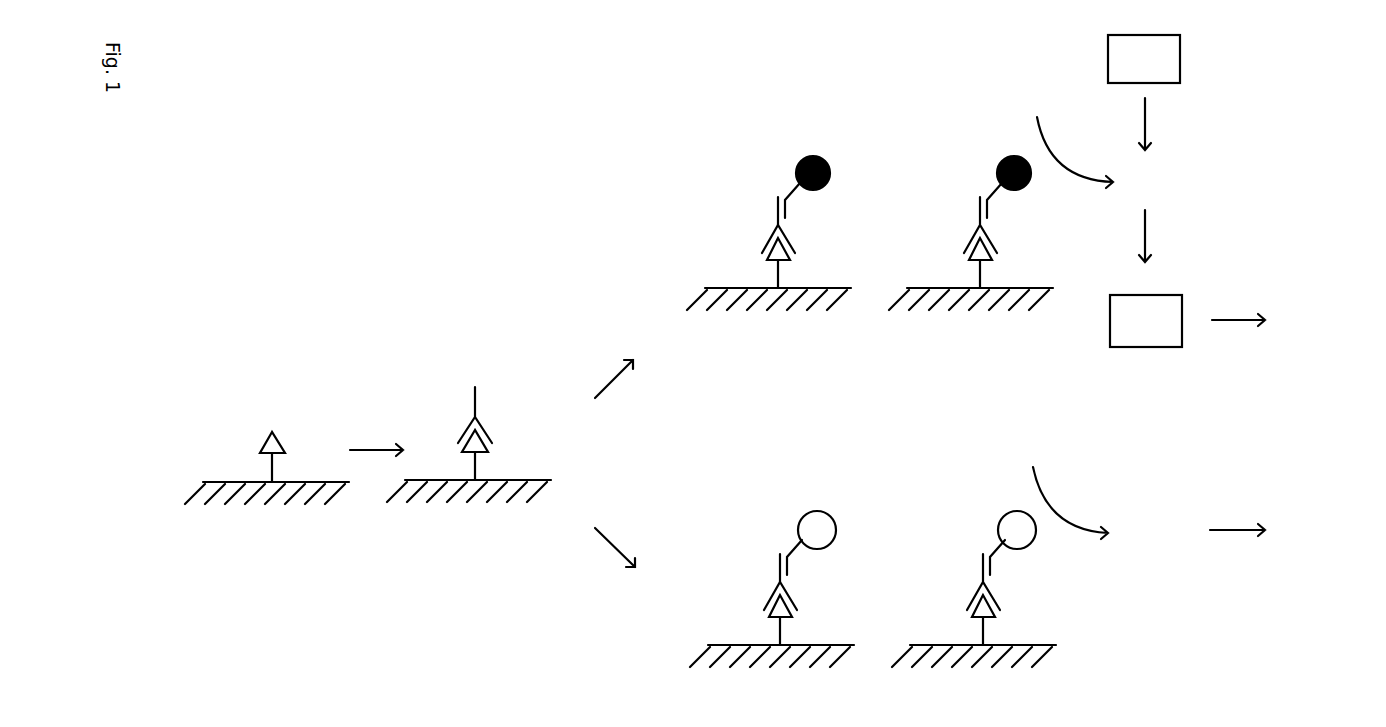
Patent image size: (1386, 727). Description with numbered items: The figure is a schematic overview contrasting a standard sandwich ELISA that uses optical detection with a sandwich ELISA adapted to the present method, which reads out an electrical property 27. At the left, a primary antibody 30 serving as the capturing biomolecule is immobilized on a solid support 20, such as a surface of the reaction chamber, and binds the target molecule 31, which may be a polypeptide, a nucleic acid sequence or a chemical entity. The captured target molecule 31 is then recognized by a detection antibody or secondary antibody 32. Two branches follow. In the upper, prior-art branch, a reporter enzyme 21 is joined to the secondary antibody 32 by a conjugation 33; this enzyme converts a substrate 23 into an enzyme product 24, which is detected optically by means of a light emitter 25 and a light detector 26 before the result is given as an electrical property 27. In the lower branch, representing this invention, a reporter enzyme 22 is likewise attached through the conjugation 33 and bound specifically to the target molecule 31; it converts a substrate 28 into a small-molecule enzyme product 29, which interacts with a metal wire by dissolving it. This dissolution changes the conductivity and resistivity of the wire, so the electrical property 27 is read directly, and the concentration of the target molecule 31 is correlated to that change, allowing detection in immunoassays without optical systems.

The support 20 is at (215, 513).
The reporter enzyme (prior art) 21 is at (993, 160).
The reporter enzyme (this invention) 22 is at (995, 512).
The substrate (prior art) 23 is at (1070, 130).
The enzyme product (prior art) 24 is at (1145, 143).
The light emitter 25 is at (1178, 59).
The light detector 26 is at (1146, 336).
The electrical property 27 is at (1286, 422).
The substrate (this invention) 28 is at (1065, 479).
The enzyme product (this invention) 29 is at (1150, 530).
The primary antibody 30 is at (263, 465).
The target molecule 31 is at (260, 432).
The detection antibody or secondary antibody 32 is at (465, 395).
The conjugation between secondary antibody and reporter enzyme 33 is at (785, 178).